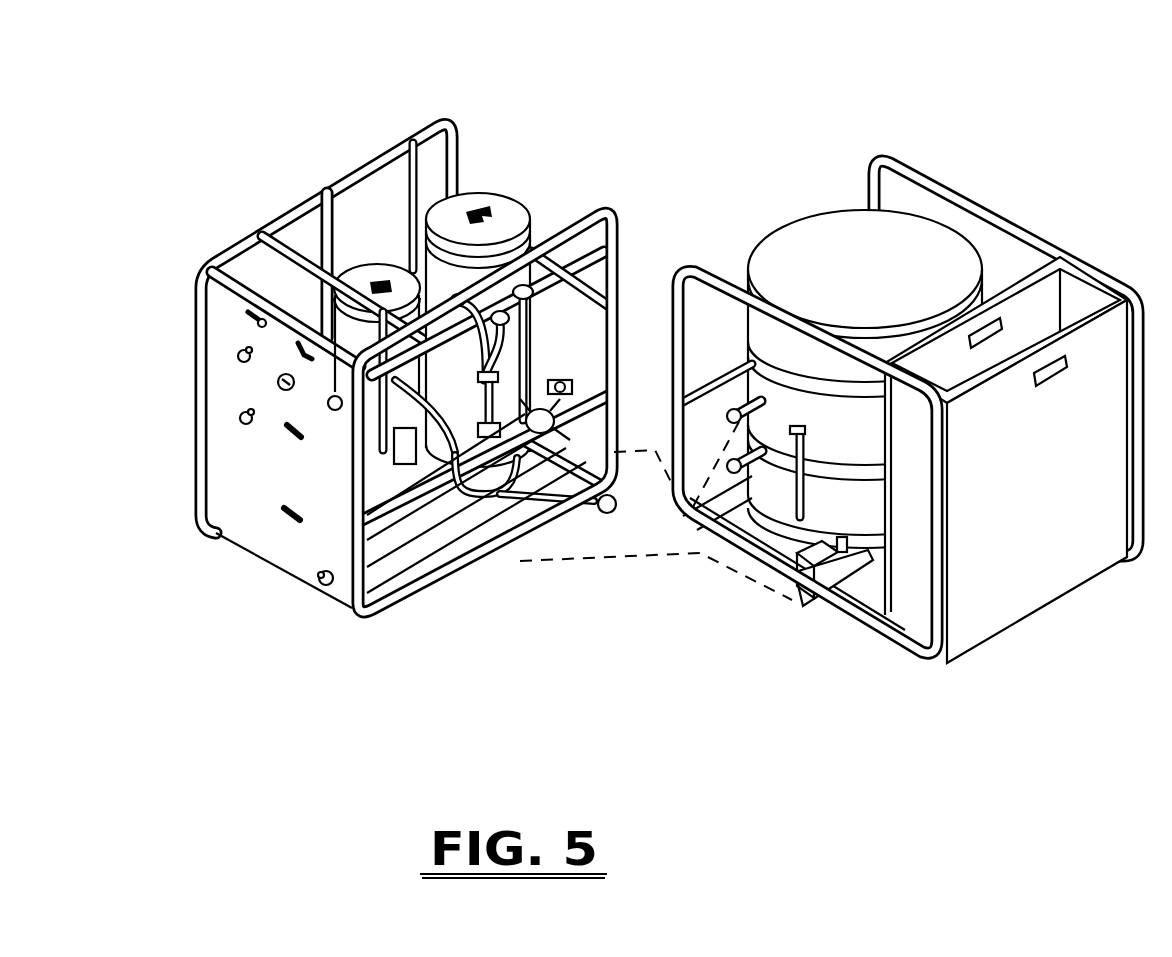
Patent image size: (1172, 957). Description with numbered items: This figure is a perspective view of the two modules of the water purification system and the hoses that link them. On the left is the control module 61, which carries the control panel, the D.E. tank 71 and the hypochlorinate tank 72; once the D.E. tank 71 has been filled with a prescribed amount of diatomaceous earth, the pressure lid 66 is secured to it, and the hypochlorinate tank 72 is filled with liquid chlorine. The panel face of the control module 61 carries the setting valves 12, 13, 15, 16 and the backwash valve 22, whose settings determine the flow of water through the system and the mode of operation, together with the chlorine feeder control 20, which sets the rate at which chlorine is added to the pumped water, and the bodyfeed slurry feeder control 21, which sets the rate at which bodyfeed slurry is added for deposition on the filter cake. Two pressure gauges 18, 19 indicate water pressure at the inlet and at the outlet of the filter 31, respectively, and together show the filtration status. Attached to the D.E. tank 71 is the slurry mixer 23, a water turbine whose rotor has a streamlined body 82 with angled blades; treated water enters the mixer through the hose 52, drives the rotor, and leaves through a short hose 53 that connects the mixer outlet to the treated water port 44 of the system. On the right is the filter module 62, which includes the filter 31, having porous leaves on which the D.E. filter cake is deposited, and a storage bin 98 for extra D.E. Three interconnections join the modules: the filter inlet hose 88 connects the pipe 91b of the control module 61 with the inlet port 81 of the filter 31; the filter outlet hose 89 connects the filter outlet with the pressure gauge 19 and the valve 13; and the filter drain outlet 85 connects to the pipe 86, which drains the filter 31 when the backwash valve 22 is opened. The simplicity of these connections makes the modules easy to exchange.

The valve 12 is at (272, 514).
The valve 13 is at (307, 337).
The valve 15 is at (242, 320).
The valve 16 is at (300, 445).
The pressure gauge 18 is at (272, 384).
The pressure gauge 19 is at (336, 390).
The chlorine feeder control 20 is at (234, 352).
The bodyfeed slurry feeder control 21 is at (236, 416).
The backwash valve 22 is at (312, 578).
The slurry mixer 23 is at (482, 325).
The filter 31 is at (820, 238).
The treated water port 44 is at (551, 412).
The hose 52 is at (457, 298).
The short hose 53 is at (560, 380).
The control module 61 is at (366, 156).
The filter module 62 is at (875, 152).
The pressure lid 66 is at (442, 214).
The D.E. tank 71 is at (458, 382).
The hypochlorinate tank 72 is at (384, 262).
The inlet port 81 is at (738, 452).
The streamlined body 82 is at (738, 402).
The filter drain outlet 85 is at (798, 580).
The pipe 86 is at (438, 577).
The filter inlet hose 88 is at (582, 503).
The filter outlet hose 89 is at (510, 486).
The pipe 91b is at (449, 515).
The storage bin 98 is at (1006, 555).